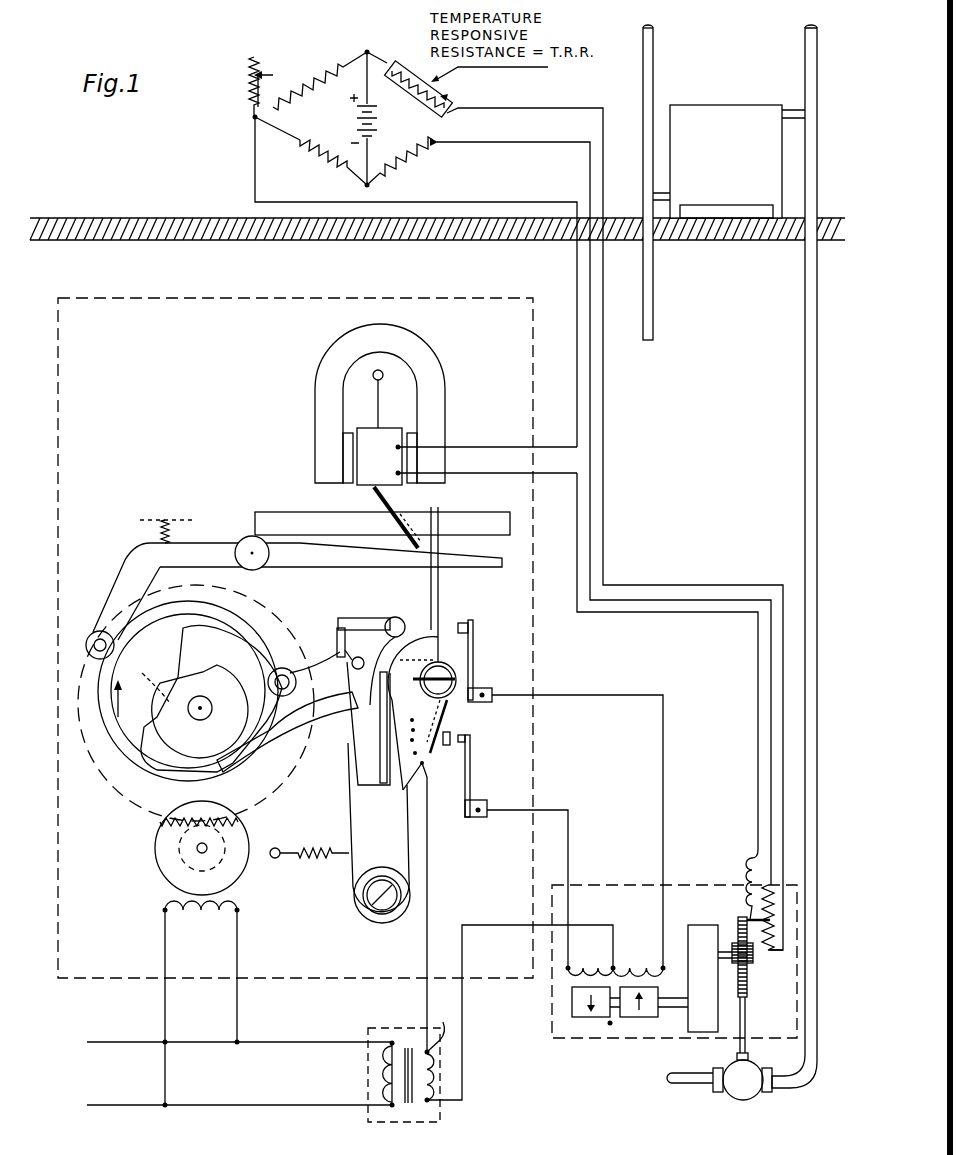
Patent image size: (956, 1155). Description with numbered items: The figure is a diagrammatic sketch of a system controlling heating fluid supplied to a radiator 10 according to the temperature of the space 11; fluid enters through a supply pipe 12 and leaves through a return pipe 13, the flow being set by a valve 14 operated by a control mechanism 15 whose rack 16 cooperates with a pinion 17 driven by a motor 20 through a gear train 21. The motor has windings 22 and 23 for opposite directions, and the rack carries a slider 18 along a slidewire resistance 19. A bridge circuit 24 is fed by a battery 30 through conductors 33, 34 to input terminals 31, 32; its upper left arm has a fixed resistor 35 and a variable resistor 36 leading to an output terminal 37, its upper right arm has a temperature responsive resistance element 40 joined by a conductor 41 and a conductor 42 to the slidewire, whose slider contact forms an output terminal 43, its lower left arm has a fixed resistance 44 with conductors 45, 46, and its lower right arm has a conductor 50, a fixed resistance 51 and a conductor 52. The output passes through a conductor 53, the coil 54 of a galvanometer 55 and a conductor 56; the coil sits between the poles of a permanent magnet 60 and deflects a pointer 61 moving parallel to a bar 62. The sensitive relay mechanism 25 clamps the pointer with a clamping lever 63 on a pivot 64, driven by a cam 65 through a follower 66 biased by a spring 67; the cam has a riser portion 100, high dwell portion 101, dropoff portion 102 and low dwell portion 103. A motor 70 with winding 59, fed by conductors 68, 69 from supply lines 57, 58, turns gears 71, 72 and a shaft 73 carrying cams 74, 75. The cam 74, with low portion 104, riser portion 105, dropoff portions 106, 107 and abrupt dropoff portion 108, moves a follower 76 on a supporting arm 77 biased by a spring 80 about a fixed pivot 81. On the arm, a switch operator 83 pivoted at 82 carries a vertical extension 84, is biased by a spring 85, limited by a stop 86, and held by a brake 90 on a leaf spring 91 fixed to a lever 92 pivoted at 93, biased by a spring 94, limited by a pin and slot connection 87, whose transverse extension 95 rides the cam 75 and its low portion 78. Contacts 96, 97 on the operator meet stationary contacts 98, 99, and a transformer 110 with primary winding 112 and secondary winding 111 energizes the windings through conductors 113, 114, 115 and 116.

The radiator 10 is at (719, 105).
The space 11 is at (689, 63).
The supply pipe 12 is at (818, 160).
The return pipe 13 is at (641, 173).
The valve 14 is at (750, 1100).
The control mechanism 15 is at (686, 882).
The rack 16 is at (748, 987).
The pinion 17 is at (755, 960).
The slider 18 is at (745, 892).
The slidewire resistance 19 is at (773, 900).
The motor 20 is at (612, 1024).
The gear train 21 is at (702, 925).
The winding 22 is at (596, 962).
The winding 23 is at (630, 962).
The bridge circuit 24 is at (314, 127).
The sensitive relay mechanism 25 is at (141, 376).
The battery 30 is at (378, 125).
The input terminal 31 is at (369, 48).
The input terminal 32 is at (370, 186).
The conductor 33 is at (364, 86).
The conductor 34 is at (362, 150).
The fixed resistor 35 is at (310, 82).
The variable resistor 36 is at (250, 76).
The output terminal 37 is at (252, 119).
The resistance element 40 is at (450, 94).
The conductor 41 is at (383, 59).
The conductor 42 is at (605, 410).
The output terminal 43 is at (772, 920).
The fixed resistance 44 is at (330, 162).
The conductor 45 is at (353, 177).
The conductor 46 is at (268, 130).
The conductor 50 is at (376, 173).
The fixed resistance 51 is at (420, 150).
The conductor 52 is at (588, 175).
The conductor 53 is at (467, 202).
The coil 54 is at (388, 428).
The galvanometer 55 is at (452, 394).
The conductor 56 is at (575, 562).
The supply line 57 is at (112, 1042).
The supply line 58 is at (117, 1105).
The winding 59 is at (195, 918).
The permanent magnet 60 is at (317, 383).
The pointer 61 is at (395, 495).
The bar 62 is at (485, 512).
The clamping lever 63 is at (325, 565).
The pivot 64 is at (250, 537).
The cam 65 is at (127, 656).
The follower 66 is at (90, 630).
The spring 67 is at (158, 531).
The conductor 68 is at (166, 1015).
The conductor 69 is at (238, 1012).
The motor 70 is at (254, 890).
The gear 71 is at (182, 861).
The gear 72 is at (150, 815).
The shaft 73 is at (209, 703).
The cam 74 is at (195, 654).
The cam 75 is at (192, 744).
The follower 76 is at (290, 667).
The supporting arm 77 is at (348, 807).
The low portion 78 is at (205, 672).
The spring 80 is at (312, 860).
The fixed pivot 81 is at (375, 912).
The pivot 82 is at (445, 670).
The switch operator 83 is at (407, 753).
The vertical extension 84 is at (441, 548).
The spring 85 is at (450, 710).
The stop 86 is at (413, 618).
The pin and slot connection 87 is at (365, 617).
The brake 90 is at (391, 672).
The leaf spring 91 is at (370, 727).
The lever 92 is at (362, 795).
The pivot 93 is at (380, 610).
The spring 94 is at (325, 635).
The transverse extension 95 is at (333, 720).
The switch contact 96 is at (447, 748).
The switch contact 97 is at (466, 612).
The stationary contact 98 is at (471, 765).
The stationary contact 99 is at (474, 637).
The riser portion 100 is at (278, 622).
The high dwell portion 101 is at (240, 604).
The dropoff portion 102 is at (146, 780).
The low dwell portion 103 is at (262, 778).
The low portion 104 is at (147, 681).
The riser portion 105 is at (150, 728).
The first dropoff portion 106 is at (140, 762).
The second dropoff portion 107 is at (197, 785).
The abrupt dropoff portion 108 is at (176, 648).
The transformer 110 is at (427, 1115).
The secondary winding 111 is at (442, 1028).
The primary winding 112 is at (382, 1062).
The conductor 113 is at (430, 886).
The conductor 114 is at (569, 838).
The conductor 115 is at (487, 925).
The conductor 116 is at (664, 744).